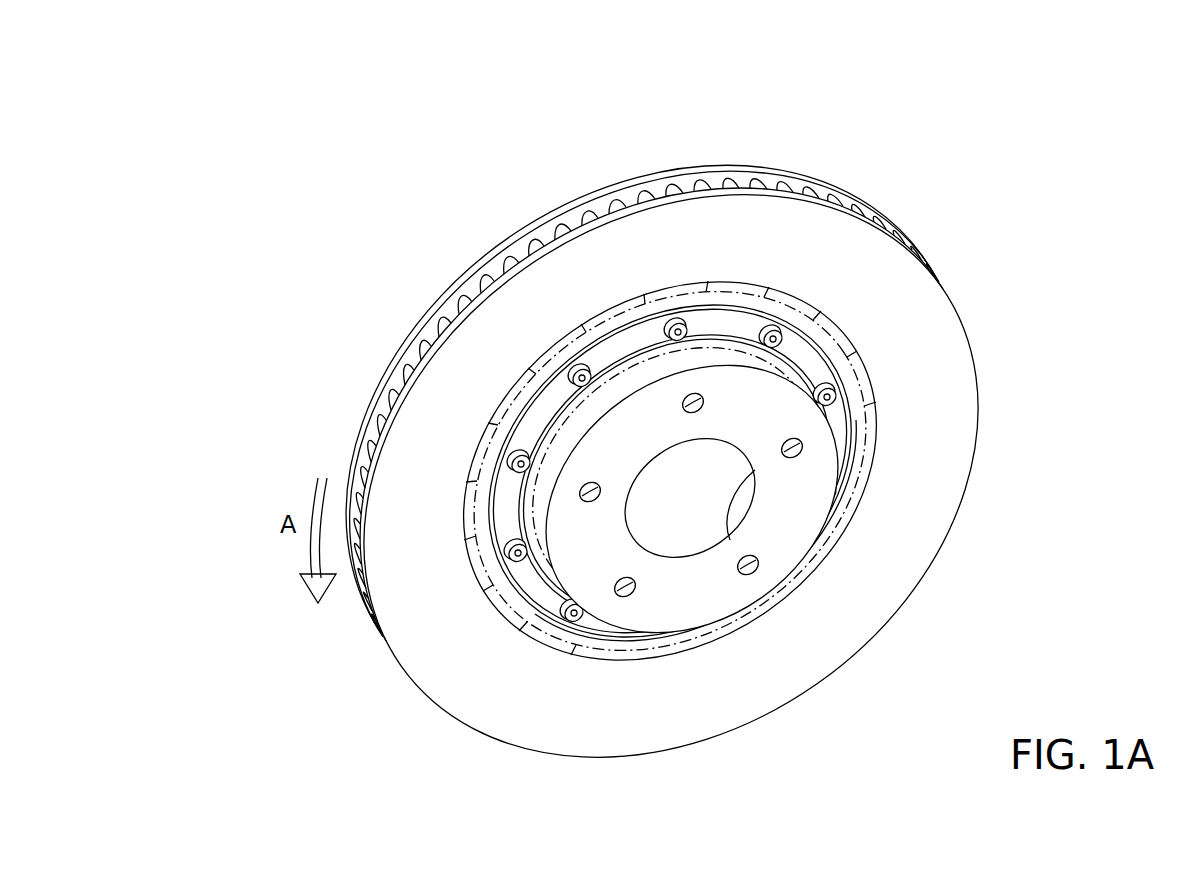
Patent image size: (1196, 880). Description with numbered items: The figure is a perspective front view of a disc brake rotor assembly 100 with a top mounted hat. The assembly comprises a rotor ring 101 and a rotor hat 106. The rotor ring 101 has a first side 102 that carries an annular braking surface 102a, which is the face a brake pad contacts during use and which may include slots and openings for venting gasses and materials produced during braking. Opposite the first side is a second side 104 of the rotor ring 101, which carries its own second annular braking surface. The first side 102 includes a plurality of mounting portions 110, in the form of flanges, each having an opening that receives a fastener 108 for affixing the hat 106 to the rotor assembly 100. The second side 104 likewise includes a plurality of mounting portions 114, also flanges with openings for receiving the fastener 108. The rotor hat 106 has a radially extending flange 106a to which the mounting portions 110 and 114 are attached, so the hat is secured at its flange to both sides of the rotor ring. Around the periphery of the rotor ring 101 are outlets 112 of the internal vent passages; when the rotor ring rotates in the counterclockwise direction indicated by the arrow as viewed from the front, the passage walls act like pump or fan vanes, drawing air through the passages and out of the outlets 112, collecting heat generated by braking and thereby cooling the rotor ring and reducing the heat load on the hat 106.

The disc brake rotor assembly 100 is at (368, 228).
The rotor ring 101 is at (372, 622).
The first side 102 is at (385, 378).
The annular braking surface 102a is at (445, 505).
The second side 104 is at (405, 332).
The rotor hat 106 is at (676, 618).
The radially extending flange 106a is at (717, 327).
The fastener 108 is at (565, 615).
The mounting portions 110 is at (684, 292).
The outlets 112 is at (516, 248).
The mounting portions 114 is at (775, 307).